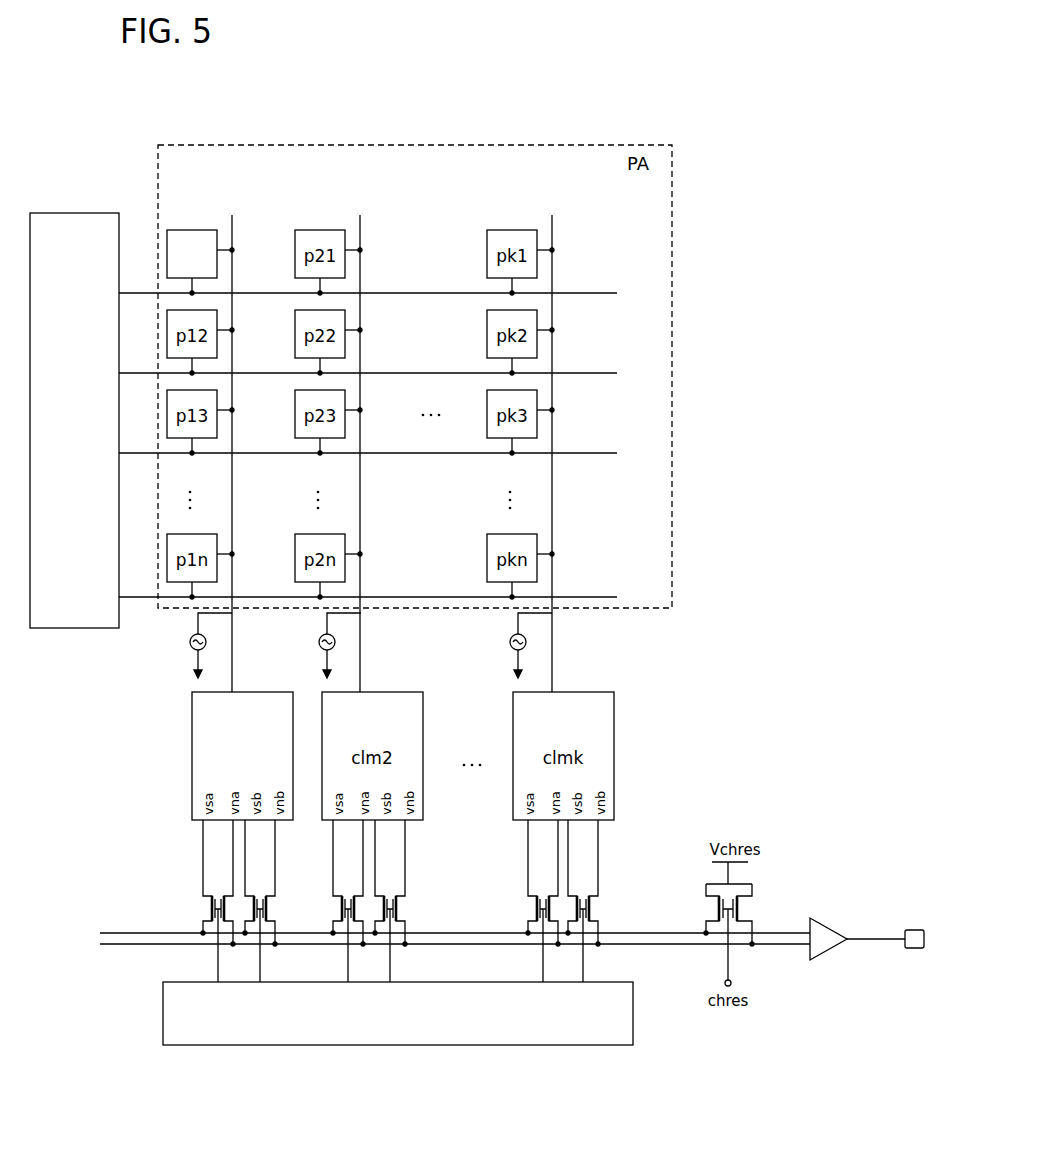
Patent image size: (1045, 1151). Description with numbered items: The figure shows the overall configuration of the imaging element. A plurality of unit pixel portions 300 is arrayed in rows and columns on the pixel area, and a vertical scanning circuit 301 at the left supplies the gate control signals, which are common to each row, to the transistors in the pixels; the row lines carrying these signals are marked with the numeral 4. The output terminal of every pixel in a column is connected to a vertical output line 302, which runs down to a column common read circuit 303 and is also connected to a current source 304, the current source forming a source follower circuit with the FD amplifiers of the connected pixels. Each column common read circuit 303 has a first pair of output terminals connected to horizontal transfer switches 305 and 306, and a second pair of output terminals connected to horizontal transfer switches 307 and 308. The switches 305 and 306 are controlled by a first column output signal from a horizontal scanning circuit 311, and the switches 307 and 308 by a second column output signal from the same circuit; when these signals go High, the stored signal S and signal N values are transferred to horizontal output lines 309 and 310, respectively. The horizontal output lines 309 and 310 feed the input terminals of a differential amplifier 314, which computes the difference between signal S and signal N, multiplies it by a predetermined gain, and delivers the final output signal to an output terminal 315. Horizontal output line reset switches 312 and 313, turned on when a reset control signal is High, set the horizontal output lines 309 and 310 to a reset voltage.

The unit pixel portion 300 is at (188, 230).
The vertical scanning circuit 301 is at (93, 213).
The vertical output line 302 is at (233, 214).
The row control line 4 is at (368, 433).
The column common read circuit 303 is at (191, 715).
The current source 304 is at (189, 648).
The horizontal transfer switch 305 is at (212, 906).
The horizontal transfer switch 306 is at (218, 892).
The horizontal transfer switch 307 is at (261, 895).
The horizontal transfer switch 308 is at (272, 908).
The horizontal output line 309 is at (455, 919).
The horizontal output line 310 is at (455, 957).
The horizontal scanning circuit 311 is at (163, 1010).
The horizontal output line reset switch 312 is at (696, 909).
The horizontal output line reset switch 313 is at (758, 915).
The differential amplifier 314 is at (828, 928).
The output terminal 315 is at (913, 930).